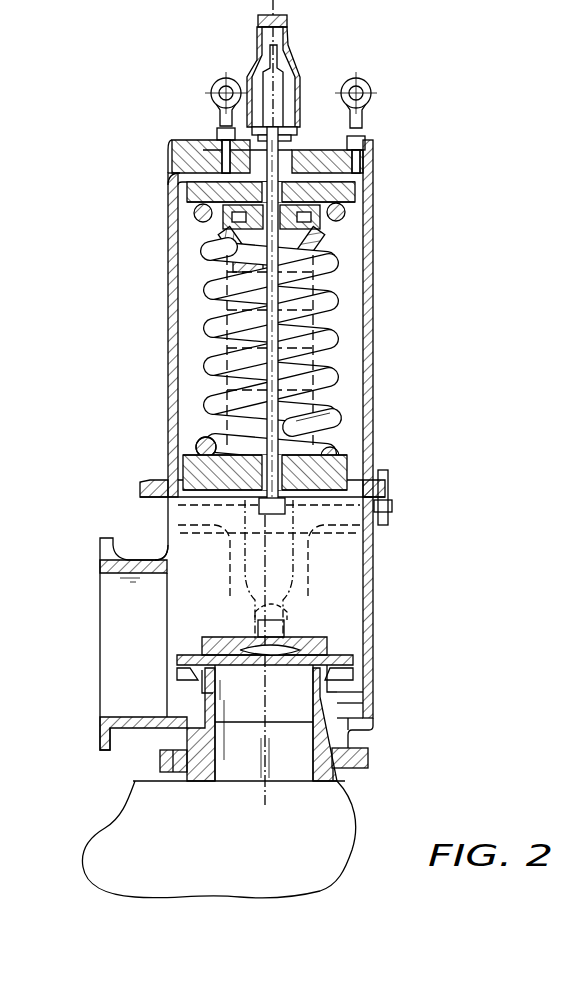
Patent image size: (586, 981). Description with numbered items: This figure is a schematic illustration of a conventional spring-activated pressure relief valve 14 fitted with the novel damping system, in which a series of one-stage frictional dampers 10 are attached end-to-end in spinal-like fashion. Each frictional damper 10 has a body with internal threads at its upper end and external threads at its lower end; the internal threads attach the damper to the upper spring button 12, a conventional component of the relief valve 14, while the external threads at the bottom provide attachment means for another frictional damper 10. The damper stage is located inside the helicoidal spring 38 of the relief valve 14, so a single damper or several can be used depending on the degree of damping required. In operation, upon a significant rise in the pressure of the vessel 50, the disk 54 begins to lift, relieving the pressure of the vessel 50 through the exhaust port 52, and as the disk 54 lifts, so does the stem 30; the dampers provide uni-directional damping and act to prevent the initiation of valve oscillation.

The one-stage frictional damper 10 is at (300, 241).
The upper spring button 12 is at (192, 191).
The pressure relief valve 14 is at (371, 218).
The stem 30 is at (200, 430).
The helicoidal spring 38 is at (342, 417).
The vessel 50 is at (284, 856).
The exhaust port 52 is at (132, 635).
The disk 54 is at (310, 650).